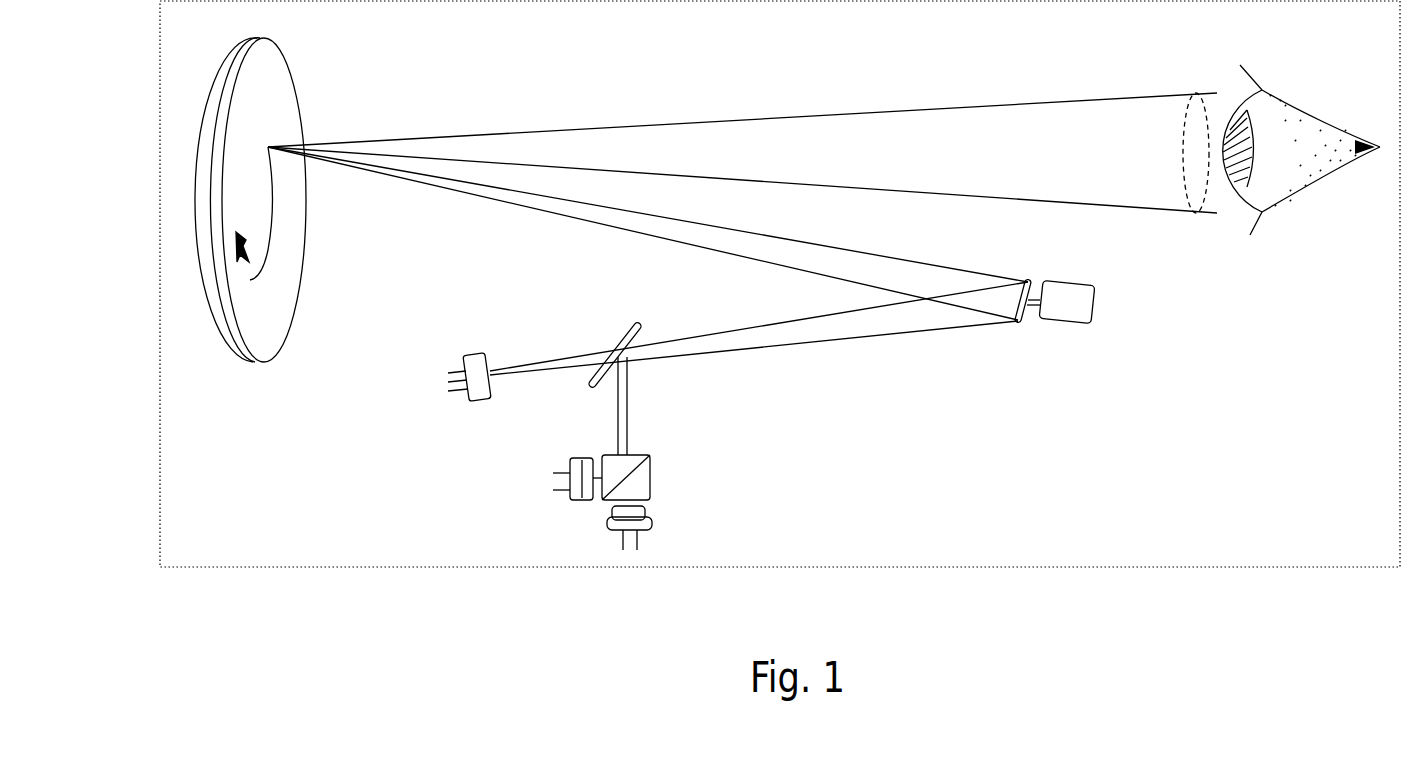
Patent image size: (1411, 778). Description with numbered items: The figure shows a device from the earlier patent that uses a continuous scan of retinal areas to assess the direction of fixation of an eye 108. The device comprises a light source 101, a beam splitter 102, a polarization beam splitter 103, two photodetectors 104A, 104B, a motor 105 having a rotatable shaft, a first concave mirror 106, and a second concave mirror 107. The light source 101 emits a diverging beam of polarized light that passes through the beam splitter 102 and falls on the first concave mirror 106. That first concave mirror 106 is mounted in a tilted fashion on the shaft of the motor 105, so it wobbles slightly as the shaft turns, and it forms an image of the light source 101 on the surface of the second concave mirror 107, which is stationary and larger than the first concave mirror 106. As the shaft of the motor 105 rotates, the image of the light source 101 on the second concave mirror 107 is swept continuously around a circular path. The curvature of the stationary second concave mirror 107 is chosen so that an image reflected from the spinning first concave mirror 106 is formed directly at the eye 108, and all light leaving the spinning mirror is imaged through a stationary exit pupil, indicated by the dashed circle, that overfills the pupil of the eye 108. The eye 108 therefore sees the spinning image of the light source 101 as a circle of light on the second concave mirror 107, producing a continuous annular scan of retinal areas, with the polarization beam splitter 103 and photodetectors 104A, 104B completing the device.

The light source 101 is at (450, 390).
The beam splitter 102 is at (632, 327).
The polarization beam splitter 103 is at (650, 470).
The photodetector 104A is at (555, 492).
The photodetector 104B is at (658, 525).
The motor 105 is at (1098, 312).
The first concave mirror 106 is at (1020, 322).
The second concave mirror 107 is at (285, 340).
The eye 108 is at (1287, 207).